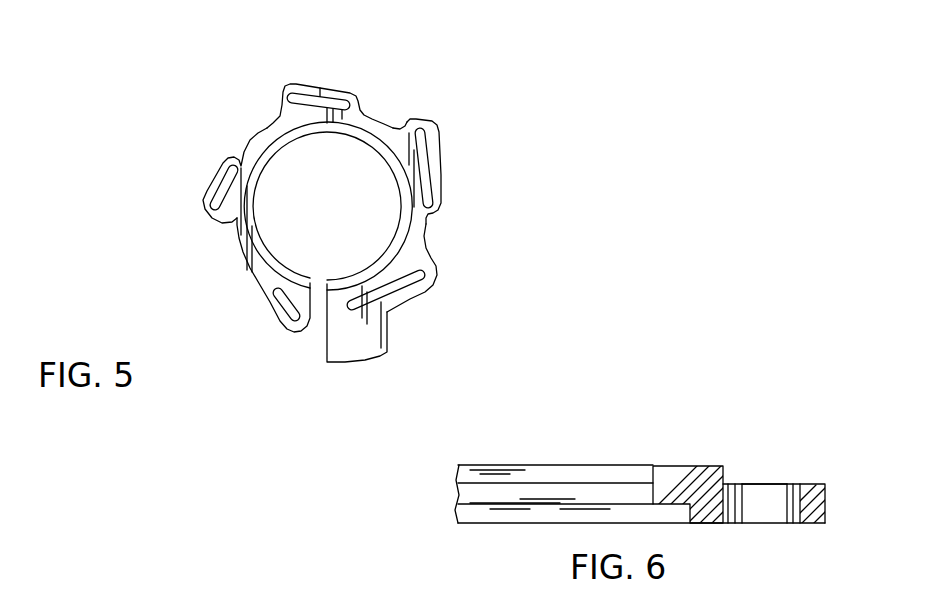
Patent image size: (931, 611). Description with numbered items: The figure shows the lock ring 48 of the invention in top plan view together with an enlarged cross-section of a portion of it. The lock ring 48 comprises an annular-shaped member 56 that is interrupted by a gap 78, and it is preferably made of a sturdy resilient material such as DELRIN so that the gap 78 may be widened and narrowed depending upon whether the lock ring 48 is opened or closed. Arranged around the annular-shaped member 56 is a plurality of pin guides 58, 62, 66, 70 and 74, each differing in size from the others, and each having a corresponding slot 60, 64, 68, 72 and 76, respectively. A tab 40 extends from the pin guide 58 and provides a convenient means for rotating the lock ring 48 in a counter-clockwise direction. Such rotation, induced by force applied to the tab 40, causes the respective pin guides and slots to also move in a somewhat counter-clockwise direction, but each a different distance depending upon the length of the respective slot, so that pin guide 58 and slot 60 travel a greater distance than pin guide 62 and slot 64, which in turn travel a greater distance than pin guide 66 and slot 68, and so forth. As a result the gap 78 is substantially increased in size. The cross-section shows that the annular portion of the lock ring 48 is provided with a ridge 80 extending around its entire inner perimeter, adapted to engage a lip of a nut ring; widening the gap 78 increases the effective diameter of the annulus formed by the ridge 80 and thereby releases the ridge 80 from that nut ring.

In FIG. 5, the tab 40 is at (378, 356).
In FIG. 5, the lock ring 48 is at (449, 90).
In FIG. 5, the annular-shaped member 56 is at (263, 160).
In FIG. 6, the annular-shaped member 56 is at (700, 466).
In FIG. 5, the pin guide 58 is at (420, 292).
In FIG. 5, the slot 60 is at (392, 304).
In FIG. 5, the pin guide 62 is at (441, 186).
In FIG. 6, the pin guide 62 is at (823, 500).
In FIG. 5, the slot 64 is at (432, 163).
In FIG. 6, the slot 64 is at (762, 507).
In FIG. 5, the pin guide 66 is at (336, 90).
In FIG. 5, the slot 68 is at (301, 94).
In FIG. 5, the pin guide 70 is at (207, 184).
In FIG. 5, the slot 72 is at (222, 213).
In FIG. 5, the pin guide 74 is at (283, 328).
In FIG. 5, the slot 76 is at (272, 306).
In FIG. 5, the gap 78 is at (315, 327).
In FIG. 6, the ridge 80 is at (653, 496).